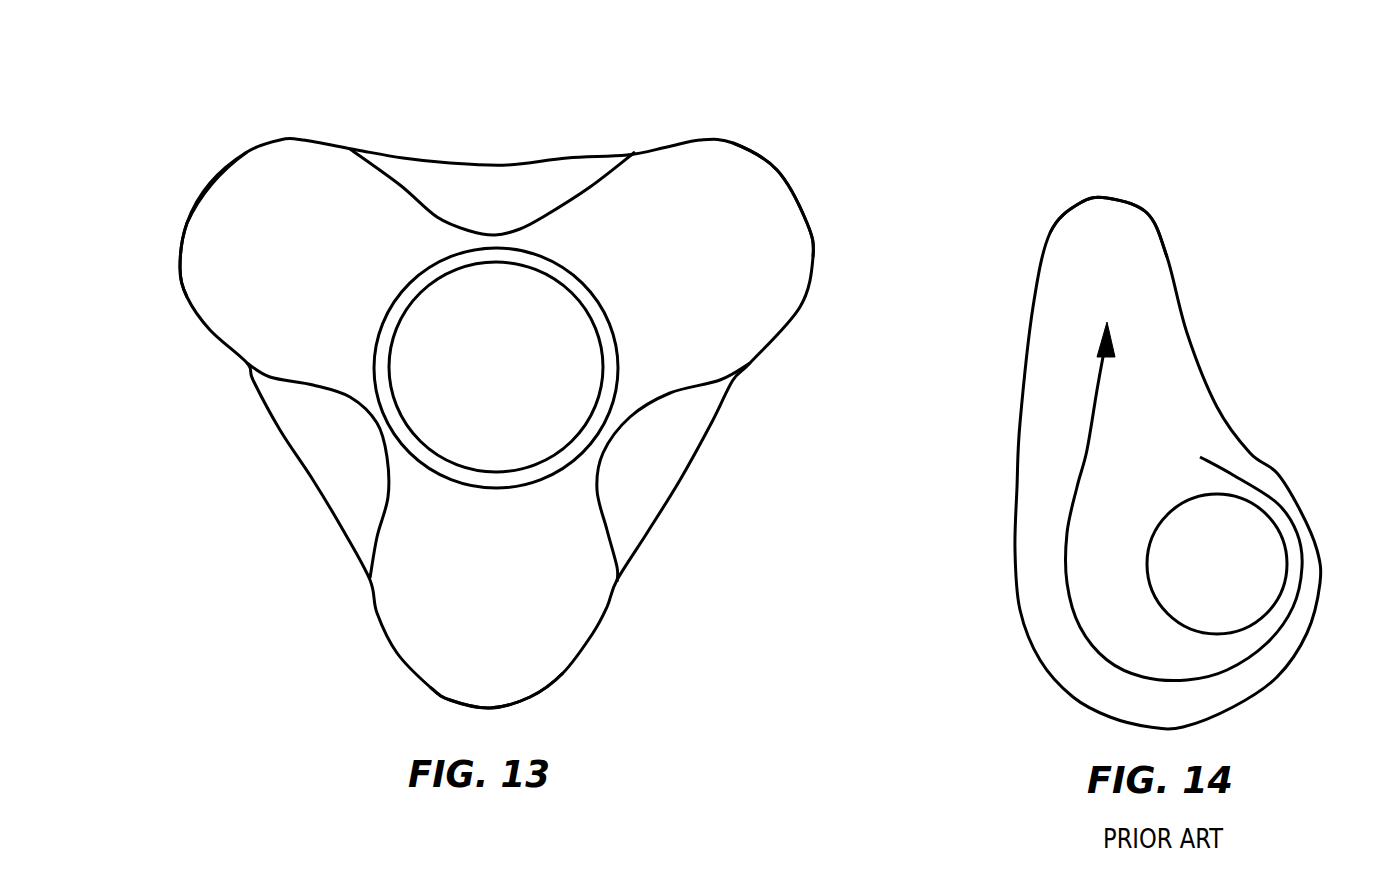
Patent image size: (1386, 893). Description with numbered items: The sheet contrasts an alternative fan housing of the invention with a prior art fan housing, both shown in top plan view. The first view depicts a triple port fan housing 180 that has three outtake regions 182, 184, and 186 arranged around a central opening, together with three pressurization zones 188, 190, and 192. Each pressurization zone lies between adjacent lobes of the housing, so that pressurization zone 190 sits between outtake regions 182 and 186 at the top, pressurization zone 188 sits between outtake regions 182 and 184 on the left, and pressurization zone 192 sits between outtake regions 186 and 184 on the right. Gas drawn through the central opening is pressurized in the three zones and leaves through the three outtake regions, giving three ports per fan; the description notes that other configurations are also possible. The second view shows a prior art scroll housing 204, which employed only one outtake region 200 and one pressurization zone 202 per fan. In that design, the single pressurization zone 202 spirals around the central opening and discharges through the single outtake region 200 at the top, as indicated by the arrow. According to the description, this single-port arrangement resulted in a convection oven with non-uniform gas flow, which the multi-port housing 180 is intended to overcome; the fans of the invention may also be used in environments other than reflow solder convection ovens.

In FIG. 13, the triple port fan housing 180 is at (710, 140).
In FIG. 13, the outtake region 182 is at (203, 217).
In FIG. 13, the outtake region 184 is at (457, 663).
In FIG. 13, the outtake region 186 is at (753, 203).
In FIG. 13, the pressurization zone 188 is at (383, 430).
In FIG. 13, the pressurization zone 190 is at (510, 245).
In FIG. 13, the pressurization zone 192 is at (603, 440).
In FIG. 14, the outtake region 200 is at (1118, 242).
In FIG. 14, the pressurization zone 202 is at (1273, 507).
In FIG. 14, the scroll housing 204 is at (1188, 337).